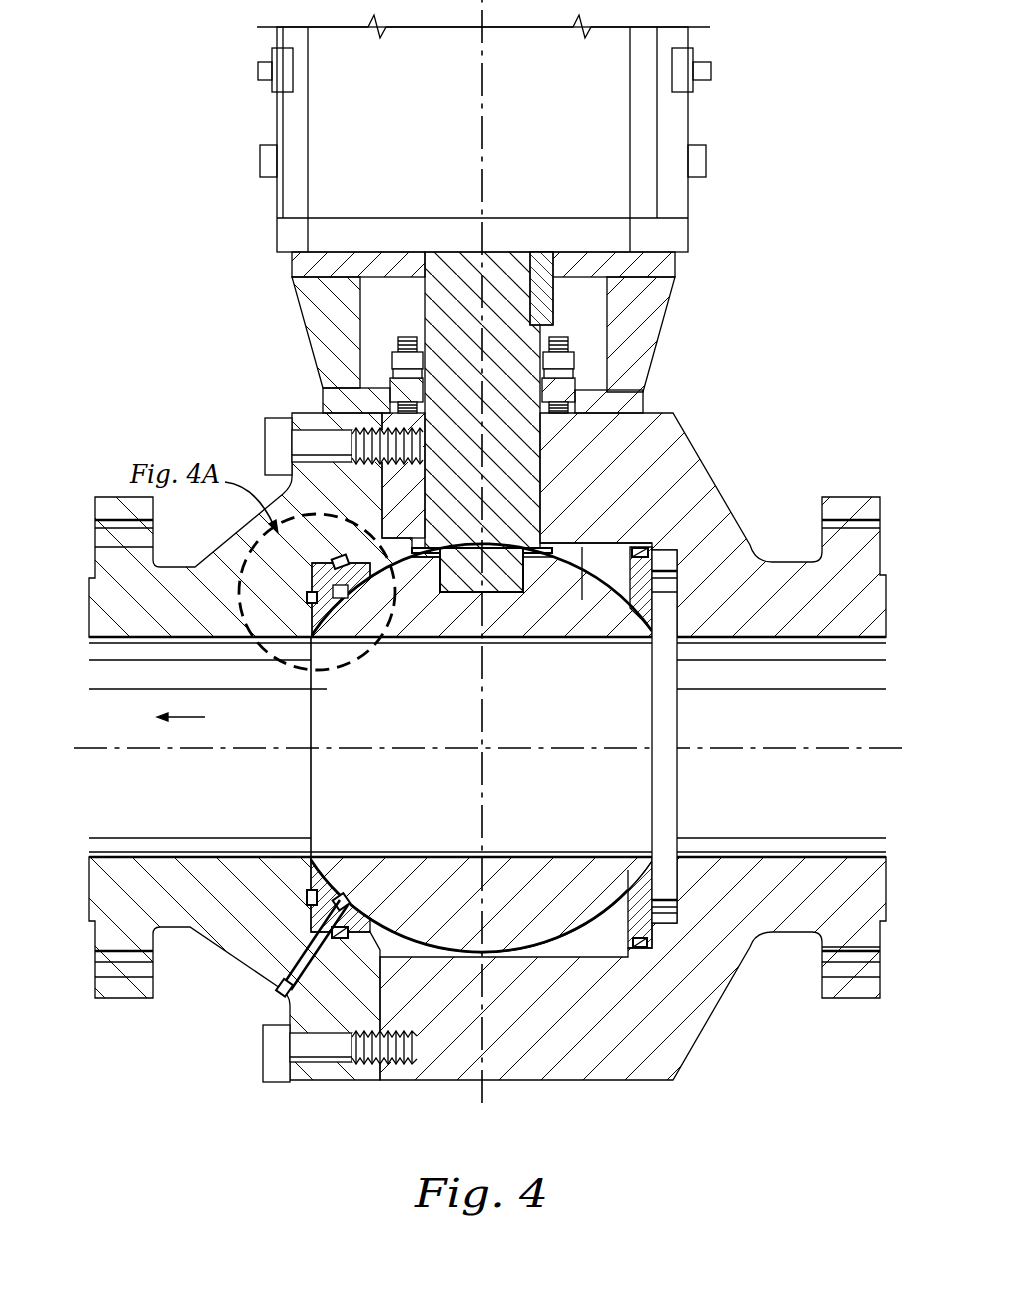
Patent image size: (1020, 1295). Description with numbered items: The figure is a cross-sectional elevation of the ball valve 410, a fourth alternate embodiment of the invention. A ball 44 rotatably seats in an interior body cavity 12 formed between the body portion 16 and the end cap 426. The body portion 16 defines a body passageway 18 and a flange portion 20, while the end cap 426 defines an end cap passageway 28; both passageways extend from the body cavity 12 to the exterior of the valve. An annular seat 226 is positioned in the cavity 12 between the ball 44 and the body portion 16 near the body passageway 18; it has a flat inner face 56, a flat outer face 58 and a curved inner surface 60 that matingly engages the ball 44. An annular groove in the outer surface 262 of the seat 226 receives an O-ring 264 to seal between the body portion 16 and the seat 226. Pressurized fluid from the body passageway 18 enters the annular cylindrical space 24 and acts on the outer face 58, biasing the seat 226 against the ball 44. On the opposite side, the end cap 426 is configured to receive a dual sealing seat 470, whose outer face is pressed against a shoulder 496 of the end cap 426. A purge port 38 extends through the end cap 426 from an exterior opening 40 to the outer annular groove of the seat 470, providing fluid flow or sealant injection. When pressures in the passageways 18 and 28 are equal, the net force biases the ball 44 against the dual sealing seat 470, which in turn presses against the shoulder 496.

The interior body cavity 12 is at (600, 938).
The body portion 16 is at (873, 595).
The body passageway 18 is at (785, 806).
The flange portion 20 is at (883, 506).
The annular cylindrical space 24 is at (665, 650).
The end cap passageway 28 is at (203, 808).
The purge port 38 is at (303, 958).
The opening 40 is at (281, 998).
The ball 44 is at (550, 940).
The inner face 56 is at (626, 580).
The outer face 58 is at (657, 553).
The curved inner surface 60 is at (634, 628).
The annular seat 226 is at (613, 547).
The outer surface 262 is at (641, 565).
The O-ring 264 is at (642, 948).
The ball valve 410 is at (498, 1144).
The end cap 426 is at (98, 593).
The dual sealing seat 470 is at (335, 640).
The shoulder 496 is at (305, 893).